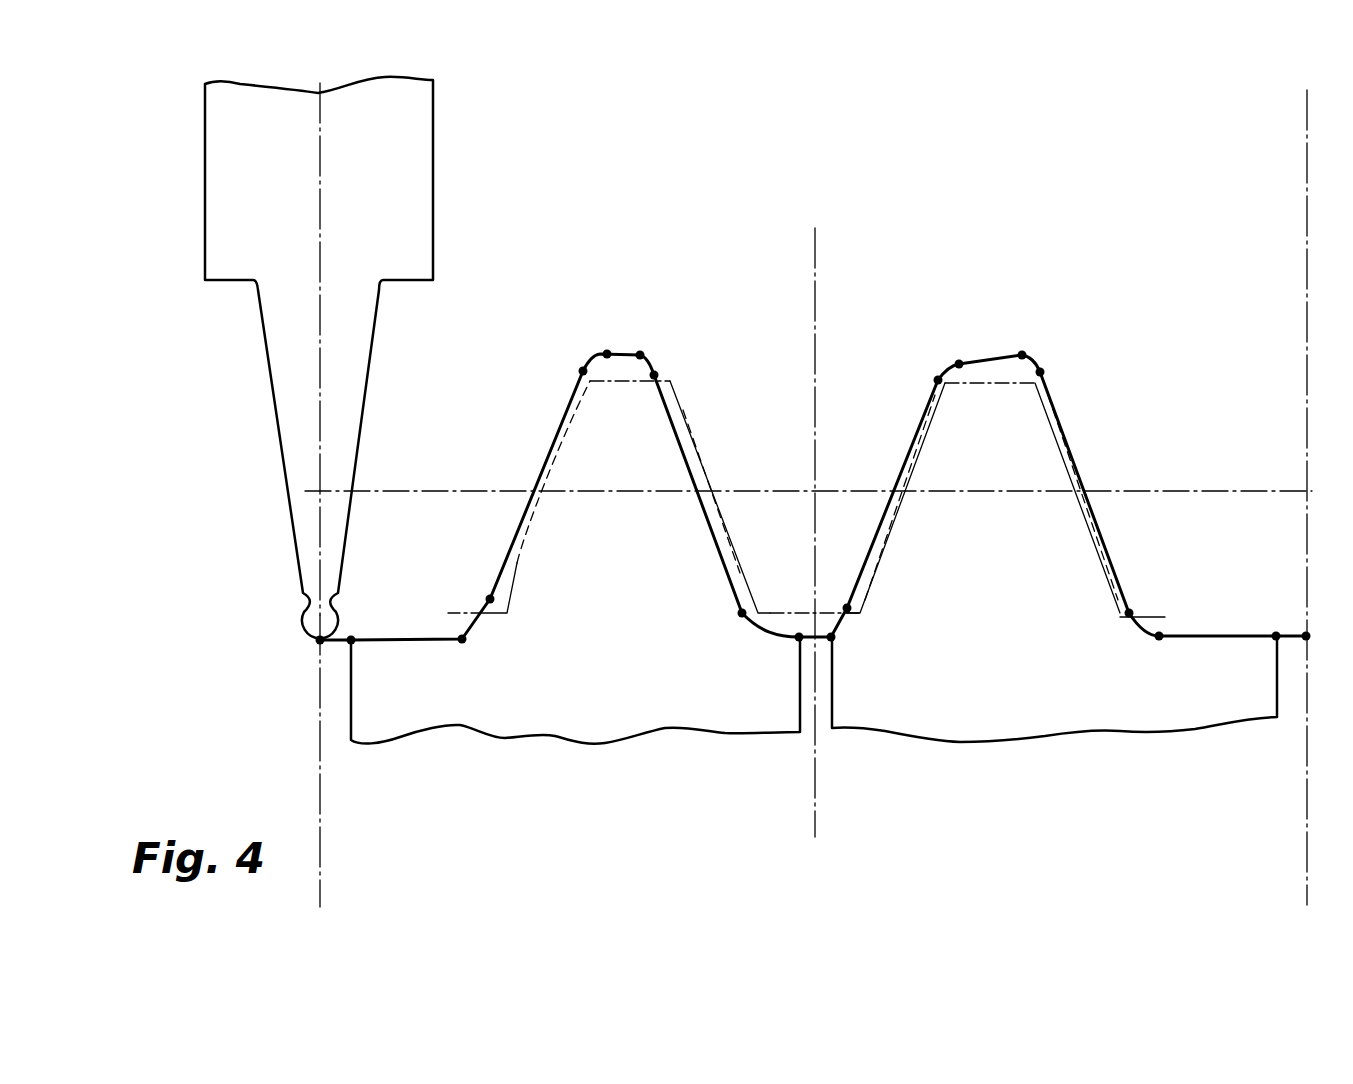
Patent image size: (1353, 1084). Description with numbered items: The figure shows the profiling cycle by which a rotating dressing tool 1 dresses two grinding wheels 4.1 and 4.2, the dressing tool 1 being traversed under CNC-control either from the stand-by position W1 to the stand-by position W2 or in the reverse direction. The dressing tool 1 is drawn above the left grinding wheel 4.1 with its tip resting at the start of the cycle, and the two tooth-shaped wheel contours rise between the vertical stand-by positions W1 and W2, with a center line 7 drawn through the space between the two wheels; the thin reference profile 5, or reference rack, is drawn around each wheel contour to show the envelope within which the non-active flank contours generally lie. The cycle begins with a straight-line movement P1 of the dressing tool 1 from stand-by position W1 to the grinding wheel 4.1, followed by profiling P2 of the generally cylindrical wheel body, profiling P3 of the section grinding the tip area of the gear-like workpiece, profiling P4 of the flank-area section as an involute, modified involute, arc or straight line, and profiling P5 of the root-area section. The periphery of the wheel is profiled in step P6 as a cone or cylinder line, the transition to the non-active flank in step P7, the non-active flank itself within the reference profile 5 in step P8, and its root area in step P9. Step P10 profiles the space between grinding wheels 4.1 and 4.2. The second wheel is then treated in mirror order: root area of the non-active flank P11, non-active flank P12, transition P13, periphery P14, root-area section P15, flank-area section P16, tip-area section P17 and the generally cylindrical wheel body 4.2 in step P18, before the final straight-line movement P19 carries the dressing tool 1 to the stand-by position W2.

The dressing tool 1 is at (433, 188).
The grinding wheel 4.1 is at (630, 362).
The grinding wheel 4.2 is at (980, 373).
The reference profile 5 is at (685, 405).
The tooth gap center line 7 is at (816, 268).
The stand-by position W1 is at (333, 778).
The stand-by position W2 is at (1315, 516).
The movement of the dressing tool from the stand-by position W1 to the grinding whee P1 is at (340, 642).
The profiling the grinding wheel 4.1 P2 is at (413, 640).
The profiling the tip-area section of the grinding wheel contour 4.1 P3 is at (480, 613).
The profiling the flank-area section of the grinding wheel contour 4.1 P4 is at (517, 563).
The profiling the root-area section of the grinding wheel contour 4.1 P5 is at (595, 355).
The profiling the periphery of the grinding wheel 4.1 P6 is at (624, 355).
The profiling the transition from the outer contour to the non-active flank area of P7 is at (648, 357).
The profiling the non-active flank area of the grinding wheel 4.1 P8 is at (714, 538).
The profiling the root area of the non-active flank of the grinding wheel 4.1 P9 is at (761, 613).
The profiling the space between grinding wheel 4.1 and 4.2 P10 is at (810, 637).
The profiling the root area of the non-active flank of the grinding wheel 4.2 P11 is at (841, 640).
The profiling the non-active flank area of the grinding wheel 4.2 P12 is at (920, 453).
The profiling the transition from the outer contour to the non-active flank area of P13 is at (949, 383).
The profiling the periphery of the grinding wheel 4.2 P14 is at (1008, 358).
The profiling the root-area section of the grinding wheel contour 4.2 P15 is at (1034, 383).
The profiling the flank-area section of the grinding wheel contour 4.2 P16 is at (1100, 557).
The profiling the tip-area section of the grinding wheel contour 4.2 P17 is at (1146, 636).
The profiling the grinding wheel body 4.2 P18 is at (1205, 636).
The moving the dressing tool to the stand-by position W2 P19 is at (1299, 638).